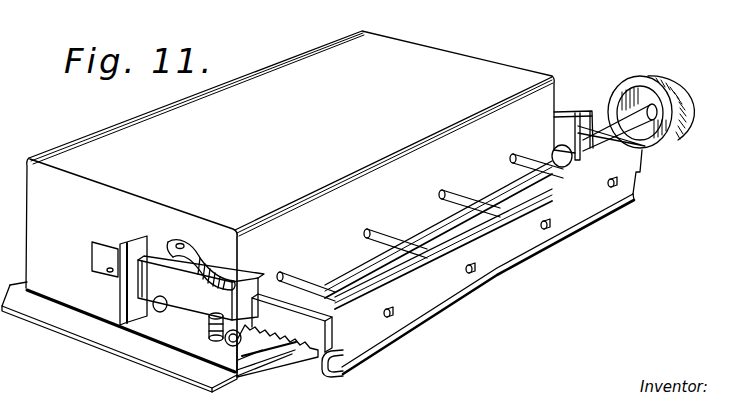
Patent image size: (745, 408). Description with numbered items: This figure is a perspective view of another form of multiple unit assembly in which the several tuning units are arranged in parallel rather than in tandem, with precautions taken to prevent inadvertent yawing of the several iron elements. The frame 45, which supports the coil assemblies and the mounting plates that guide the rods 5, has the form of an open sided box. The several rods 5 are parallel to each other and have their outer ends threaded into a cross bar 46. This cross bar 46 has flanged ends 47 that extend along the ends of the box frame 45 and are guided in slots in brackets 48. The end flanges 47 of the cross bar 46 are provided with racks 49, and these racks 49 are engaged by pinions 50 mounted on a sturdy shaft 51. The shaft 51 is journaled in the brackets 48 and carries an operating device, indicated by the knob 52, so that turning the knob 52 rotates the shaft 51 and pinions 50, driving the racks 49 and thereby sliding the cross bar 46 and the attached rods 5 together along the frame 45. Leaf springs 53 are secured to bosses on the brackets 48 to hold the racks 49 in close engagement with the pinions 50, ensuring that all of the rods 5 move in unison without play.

The frame 45 is at (58, 152).
The cross bar 46 is at (497, 276).
The flanged ends 47 is at (300, 334).
The brackets 48 is at (125, 291).
The racks 49 is at (312, 356).
The pinions 50 is at (228, 346).
The shaft 51 is at (356, 262).
The knob 52 is at (679, 82).
The leaf springs 53 is at (187, 250).
The rods 5 is at (466, 274).